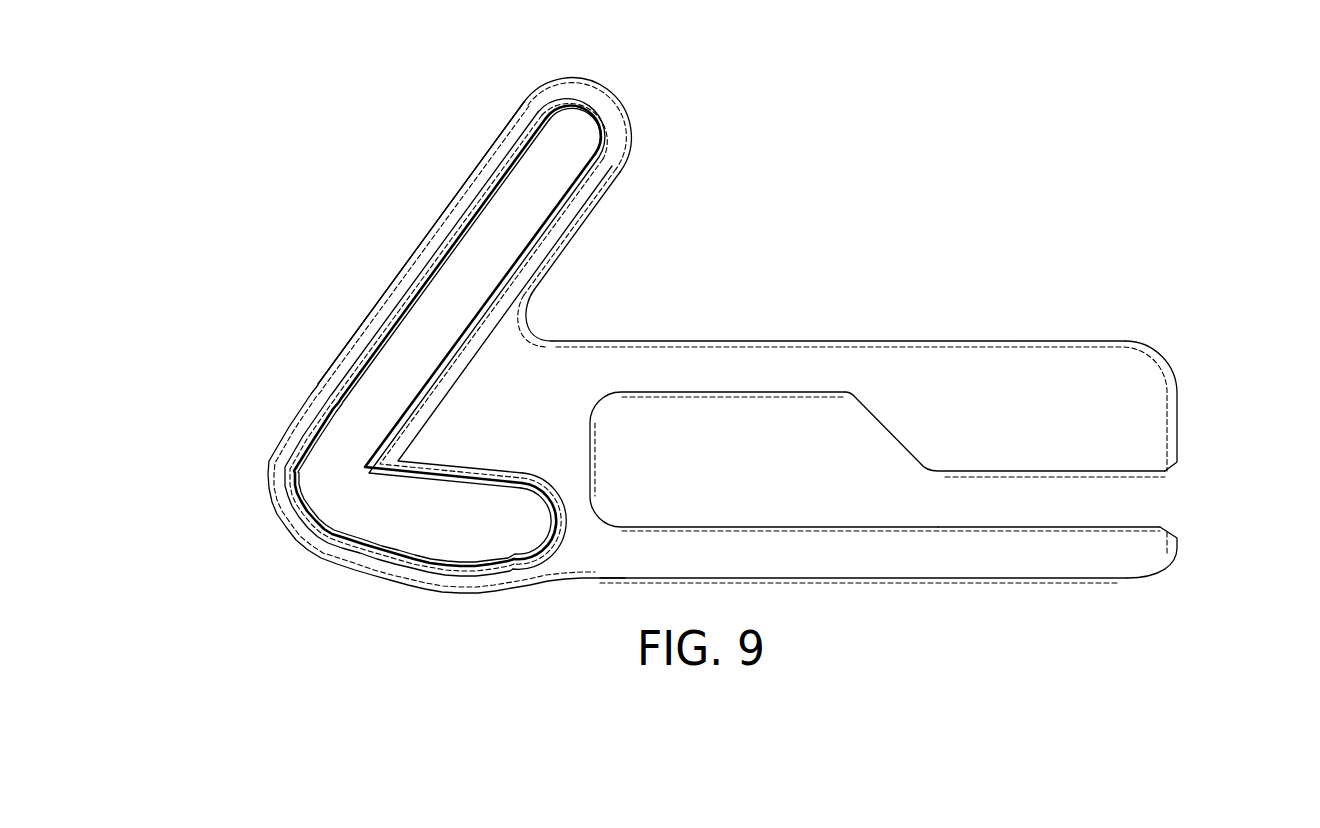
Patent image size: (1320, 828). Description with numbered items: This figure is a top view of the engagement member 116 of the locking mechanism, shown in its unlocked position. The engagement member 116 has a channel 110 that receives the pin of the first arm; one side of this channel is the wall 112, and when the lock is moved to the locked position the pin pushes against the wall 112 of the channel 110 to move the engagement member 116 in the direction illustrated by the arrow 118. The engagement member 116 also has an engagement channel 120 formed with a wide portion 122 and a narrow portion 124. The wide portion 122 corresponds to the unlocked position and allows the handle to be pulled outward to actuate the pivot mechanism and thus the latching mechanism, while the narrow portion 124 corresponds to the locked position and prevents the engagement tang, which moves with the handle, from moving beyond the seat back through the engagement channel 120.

The channel 110 is at (433, 335).
The wall 112 is at (299, 470).
The engagement member 116 is at (933, 343).
The arrow 118 is at (265, 461).
The engagement channel 120 is at (1176, 498).
The wide portion 122 is at (728, 478).
The narrow portion 124 is at (1017, 515).